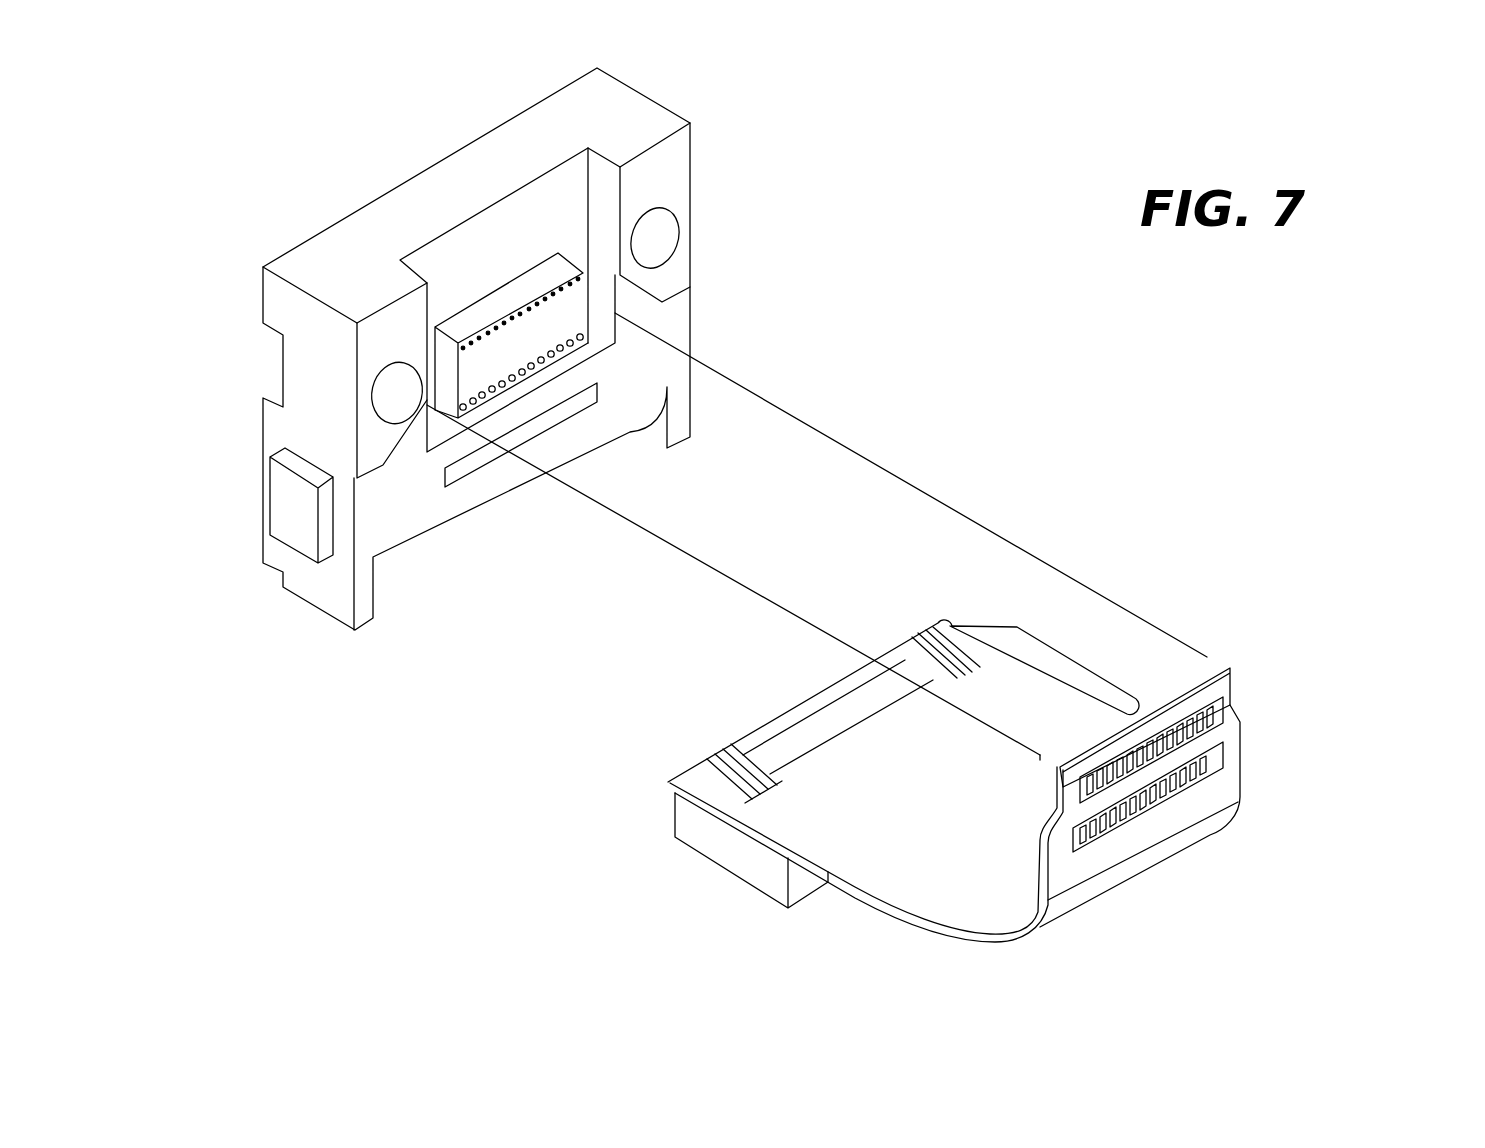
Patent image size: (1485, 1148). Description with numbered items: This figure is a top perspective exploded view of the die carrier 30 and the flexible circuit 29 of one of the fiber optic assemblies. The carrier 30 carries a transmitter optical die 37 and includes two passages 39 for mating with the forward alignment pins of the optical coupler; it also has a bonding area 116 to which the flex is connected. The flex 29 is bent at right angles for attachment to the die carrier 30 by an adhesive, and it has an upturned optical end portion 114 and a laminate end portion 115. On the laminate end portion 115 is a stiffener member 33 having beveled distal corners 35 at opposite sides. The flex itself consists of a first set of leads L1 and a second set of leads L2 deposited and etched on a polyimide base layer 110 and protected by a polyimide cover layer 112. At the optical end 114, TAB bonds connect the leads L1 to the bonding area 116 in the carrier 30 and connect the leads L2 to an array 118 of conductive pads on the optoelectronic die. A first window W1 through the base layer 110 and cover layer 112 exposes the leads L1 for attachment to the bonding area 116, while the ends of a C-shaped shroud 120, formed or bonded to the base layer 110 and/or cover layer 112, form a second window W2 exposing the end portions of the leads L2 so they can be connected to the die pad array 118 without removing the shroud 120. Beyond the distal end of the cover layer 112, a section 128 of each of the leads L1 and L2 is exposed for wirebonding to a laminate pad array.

The flexible circuit 29 is at (1145, 576).
The die carrier 30 is at (452, 186).
The stiffener member 33 is at (762, 862).
The beveled distal corners 35 is at (988, 627).
The transmitter optical die 37 is at (522, 290).
The passages 39 is at (372, 395).
The base layer 110 is at (667, 786).
The cover layer 112 is at (878, 728).
The optical end portion 114 is at (1244, 766).
The laminate end portion 115 is at (918, 810).
The bonding area 116 is at (472, 476).
The array of conductive pads 118 is at (490, 388).
The C-shaped shroud 120 is at (1234, 679).
The exposed section of leads 128 is at (940, 641).
The first set of leads L1 is at (700, 782).
The second set of leads L2 is at (738, 760).
The first window W1 is at (1075, 847).
The second window W2 is at (1085, 790).